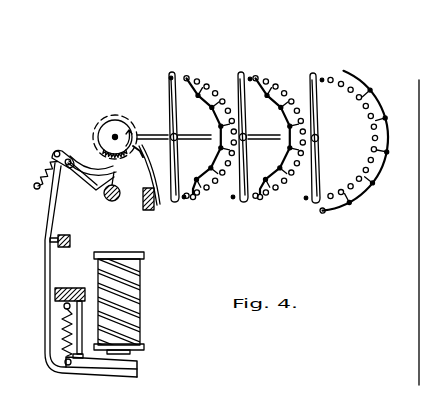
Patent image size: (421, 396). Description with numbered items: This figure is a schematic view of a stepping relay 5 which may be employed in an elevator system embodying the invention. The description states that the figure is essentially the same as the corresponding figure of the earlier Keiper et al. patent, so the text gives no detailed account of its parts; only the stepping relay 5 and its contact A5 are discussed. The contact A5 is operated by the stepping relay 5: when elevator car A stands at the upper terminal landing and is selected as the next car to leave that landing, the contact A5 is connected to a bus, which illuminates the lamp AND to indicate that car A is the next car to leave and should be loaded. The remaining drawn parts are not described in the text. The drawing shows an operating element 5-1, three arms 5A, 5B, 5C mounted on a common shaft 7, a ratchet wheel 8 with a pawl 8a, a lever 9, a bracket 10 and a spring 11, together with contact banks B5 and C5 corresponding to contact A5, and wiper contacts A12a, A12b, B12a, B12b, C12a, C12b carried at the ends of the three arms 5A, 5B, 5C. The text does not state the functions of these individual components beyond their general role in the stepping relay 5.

The stepping relay 5 is at (162, 297).
The adjusting screw 5-1 is at (58, 232).
The first wiper arm 5A is at (172, 70).
The second wiper arm 5B is at (258, 73).
The third wiper arm 5C is at (340, 75).
The shaft 7 is at (266, 120).
The ratchet wheel 8 is at (97, 117).
The pawl 8a is at (145, 163).
The armature lever 9 is at (113, 184).
The bracket 10 is at (139, 366).
The return spring 11 is at (58, 332).
The contact A5 is at (193, 200).
The contact bank B B5 is at (260, 200).
The contact bank C C5 is at (323, 213).
The upper wiper contact of arm A A12a is at (167, 100).
The lower wiper contact of arm A A12b is at (170, 195).
The upper wiper contact of arm B B12a is at (236, 88).
The lower wiper contact of arm B B12b is at (239, 190).
The upper wiper contact of arm C C12a is at (309, 84).
The lower wiper contact of arm C C12b is at (314, 188).